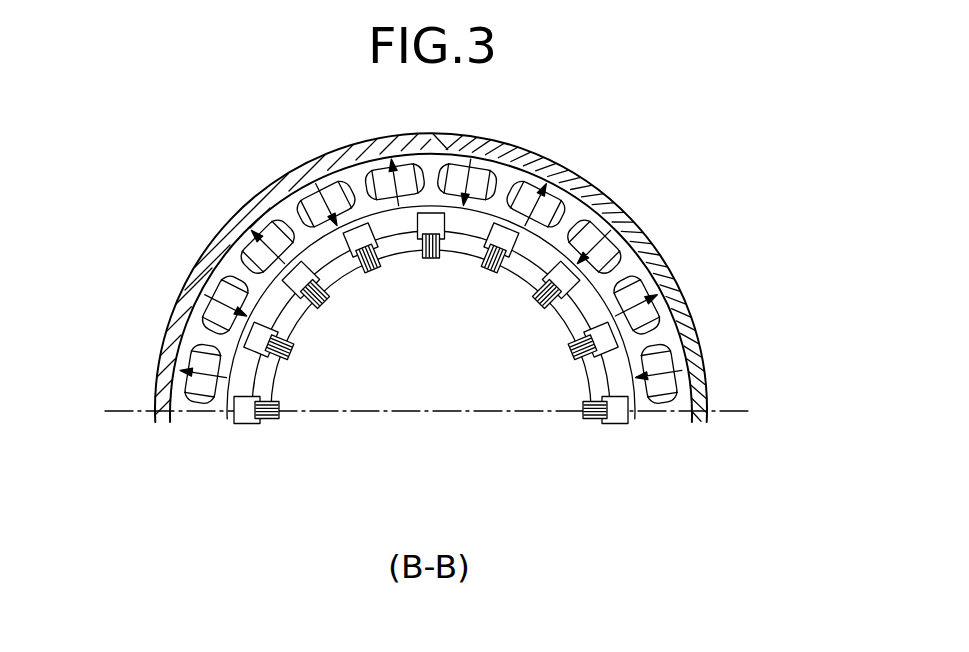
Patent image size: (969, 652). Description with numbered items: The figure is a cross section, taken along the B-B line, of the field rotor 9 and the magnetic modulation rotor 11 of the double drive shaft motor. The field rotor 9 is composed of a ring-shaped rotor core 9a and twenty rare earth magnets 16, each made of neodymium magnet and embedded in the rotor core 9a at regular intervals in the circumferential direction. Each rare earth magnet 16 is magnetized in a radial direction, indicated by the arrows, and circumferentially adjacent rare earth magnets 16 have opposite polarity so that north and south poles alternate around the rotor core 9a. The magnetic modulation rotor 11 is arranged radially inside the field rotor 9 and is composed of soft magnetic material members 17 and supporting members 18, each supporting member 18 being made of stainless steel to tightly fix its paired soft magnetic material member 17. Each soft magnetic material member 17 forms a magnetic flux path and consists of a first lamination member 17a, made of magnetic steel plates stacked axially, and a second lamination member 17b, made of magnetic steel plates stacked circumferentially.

The field rotor 9 is at (597, 182).
The rotor core 9a is at (353, 173).
The magnetic modulation rotor 11 is at (580, 297).
The rare earth magnet 16 is at (305, 203).
The soft magnetic material member 17 is at (415, 376).
The first lamination member 17a is at (243, 413).
The second lamination member 17b is at (267, 417).
The supporting member 18 is at (290, 315).